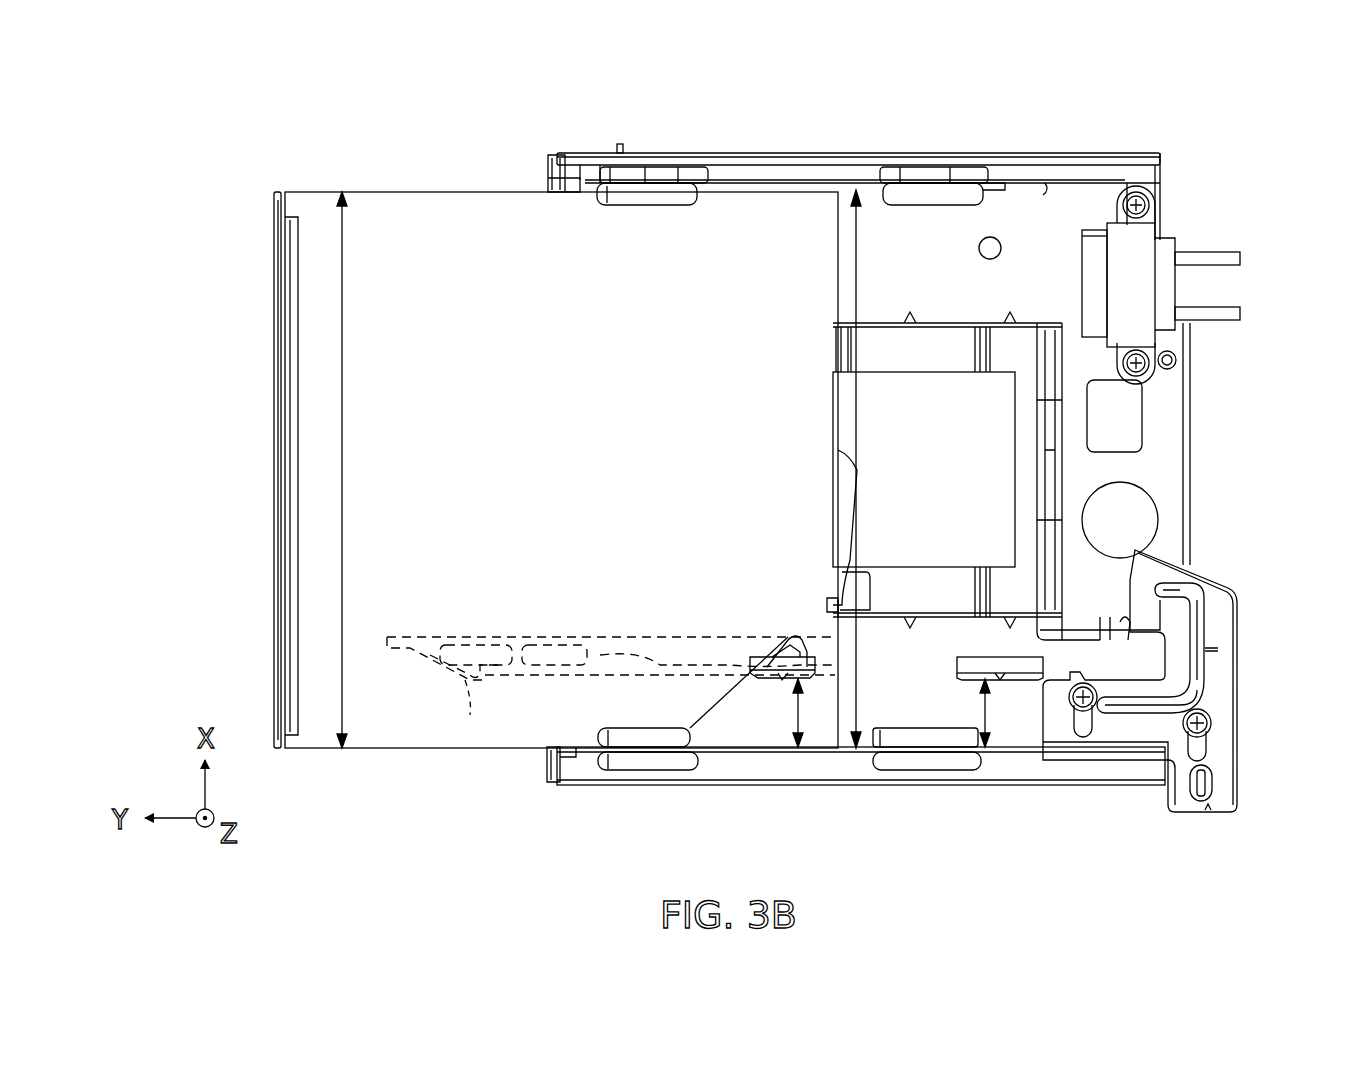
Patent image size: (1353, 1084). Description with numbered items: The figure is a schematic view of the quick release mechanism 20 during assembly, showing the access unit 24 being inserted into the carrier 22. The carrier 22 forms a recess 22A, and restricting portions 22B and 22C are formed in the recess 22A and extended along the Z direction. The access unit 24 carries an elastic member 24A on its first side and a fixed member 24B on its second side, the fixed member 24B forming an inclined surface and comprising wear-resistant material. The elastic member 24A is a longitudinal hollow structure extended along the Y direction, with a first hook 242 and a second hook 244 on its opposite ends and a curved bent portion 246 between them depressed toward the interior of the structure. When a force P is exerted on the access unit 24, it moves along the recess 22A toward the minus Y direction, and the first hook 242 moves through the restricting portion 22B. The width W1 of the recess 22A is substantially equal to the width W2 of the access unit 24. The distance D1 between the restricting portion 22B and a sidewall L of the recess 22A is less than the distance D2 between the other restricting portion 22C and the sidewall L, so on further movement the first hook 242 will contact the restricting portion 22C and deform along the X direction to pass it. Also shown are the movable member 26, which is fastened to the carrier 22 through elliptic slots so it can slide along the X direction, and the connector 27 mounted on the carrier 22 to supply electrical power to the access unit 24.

The quick release mechanism 20 is at (188, 108).
The carrier 22 is at (793, 165).
The recess 22A is at (1048, 225).
The restricting portion 22B is at (773, 752).
The restricting portion 22C is at (970, 680).
The access unit 24 is at (318, 360).
The elastic member 24A is at (486, 636).
The fixed member 24B is at (840, 520).
The first hook 242 is at (773, 650).
The second hook 244 is at (470, 682).
The curved bent portion 246 is at (612, 648).
The movable member 26 is at (1215, 663).
The connector 27 is at (1160, 265).
The force P is at (246, 469).
The sidewall L is at (712, 738).
The width of the recess W1 is at (879, 469).
The width of the access unit W2 is at (369, 471).
The distance D1 is at (823, 716).
The distance D2 is at (1008, 713).